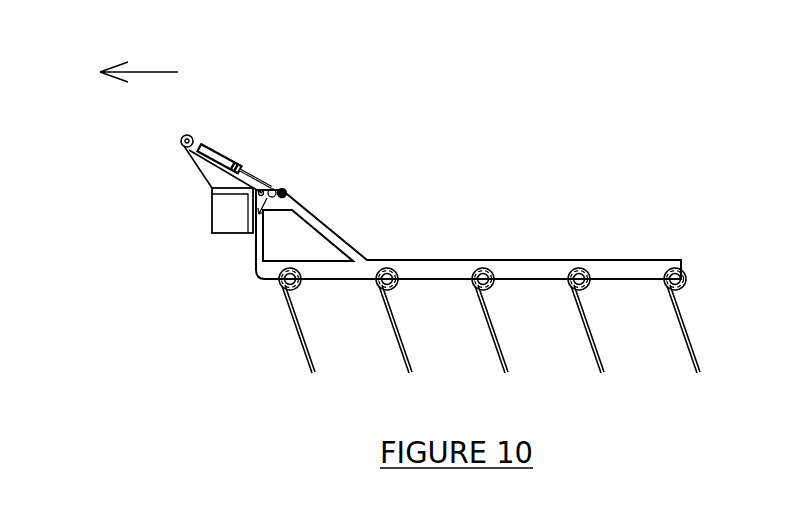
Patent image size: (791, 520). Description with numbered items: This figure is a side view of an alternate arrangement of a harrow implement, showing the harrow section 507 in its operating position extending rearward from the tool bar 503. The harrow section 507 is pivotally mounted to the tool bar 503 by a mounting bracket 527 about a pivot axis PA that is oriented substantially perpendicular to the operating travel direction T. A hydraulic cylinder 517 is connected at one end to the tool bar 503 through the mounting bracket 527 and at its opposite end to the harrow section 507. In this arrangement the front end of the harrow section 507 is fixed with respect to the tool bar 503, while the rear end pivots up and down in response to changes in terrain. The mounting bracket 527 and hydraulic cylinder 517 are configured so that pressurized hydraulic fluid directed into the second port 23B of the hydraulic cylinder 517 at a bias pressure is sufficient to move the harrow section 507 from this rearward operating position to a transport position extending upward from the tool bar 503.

The operating travel direction T is at (158, 72).
The harrow section 507 is at (590, 260).
The tool bar 503 is at (212, 218).
The mounting bracket 527 is at (202, 175).
The hydraulic cylinder 517 is at (212, 147).
The second port 23B is at (243, 166).
The pivot axis PA is at (274, 190).